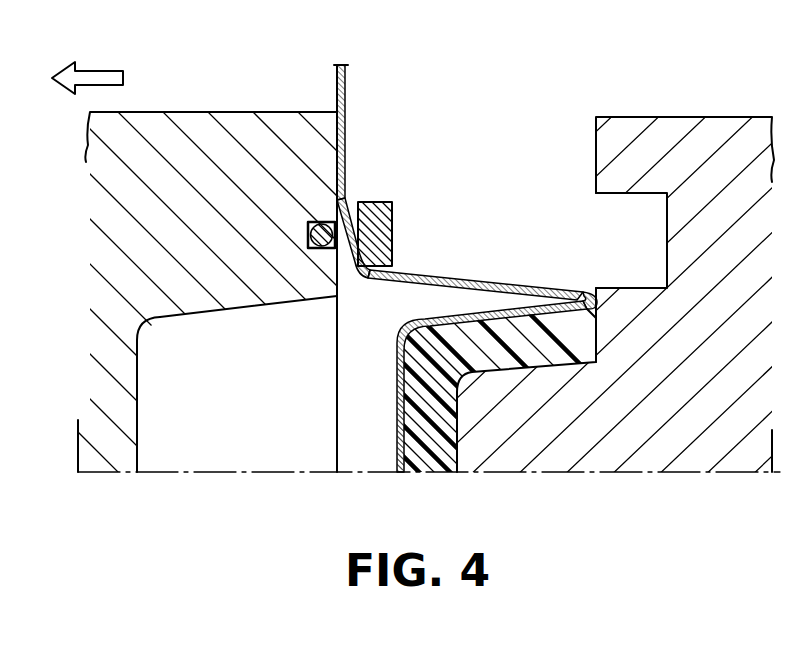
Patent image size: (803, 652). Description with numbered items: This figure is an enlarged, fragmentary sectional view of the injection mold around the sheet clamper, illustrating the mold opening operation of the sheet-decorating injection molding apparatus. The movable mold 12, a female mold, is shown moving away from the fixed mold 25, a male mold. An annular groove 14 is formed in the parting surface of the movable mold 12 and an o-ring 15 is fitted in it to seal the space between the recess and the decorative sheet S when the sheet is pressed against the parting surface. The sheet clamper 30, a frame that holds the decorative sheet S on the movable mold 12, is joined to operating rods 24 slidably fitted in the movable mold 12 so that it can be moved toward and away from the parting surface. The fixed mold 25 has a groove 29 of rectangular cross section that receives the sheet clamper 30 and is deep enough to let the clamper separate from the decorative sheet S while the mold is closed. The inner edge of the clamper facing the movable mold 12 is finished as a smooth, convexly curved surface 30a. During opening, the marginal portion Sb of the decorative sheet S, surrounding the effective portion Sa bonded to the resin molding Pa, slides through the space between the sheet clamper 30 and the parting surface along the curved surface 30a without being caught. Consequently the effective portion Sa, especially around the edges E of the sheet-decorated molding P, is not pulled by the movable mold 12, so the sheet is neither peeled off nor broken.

The movable mold 12 is at (178, 135).
The annular groove 14 is at (295, 222).
The o-ring 15 is at (325, 215).
The operating rods 24 is at (337, 272).
The fixed mold 25 is at (693, 157).
The groove 29 is at (597, 192).
The sheet clamper 30 is at (393, 202).
The convexly curved surface 30a is at (362, 277).
The decorative sheet S is at (346, 82).
The effective portion Sa is at (397, 432).
The marginal portion Sb is at (348, 142).
The edges E is at (580, 290).
The sheet-decorated molding P is at (392, 461).
The resin molding Pa is at (397, 393).